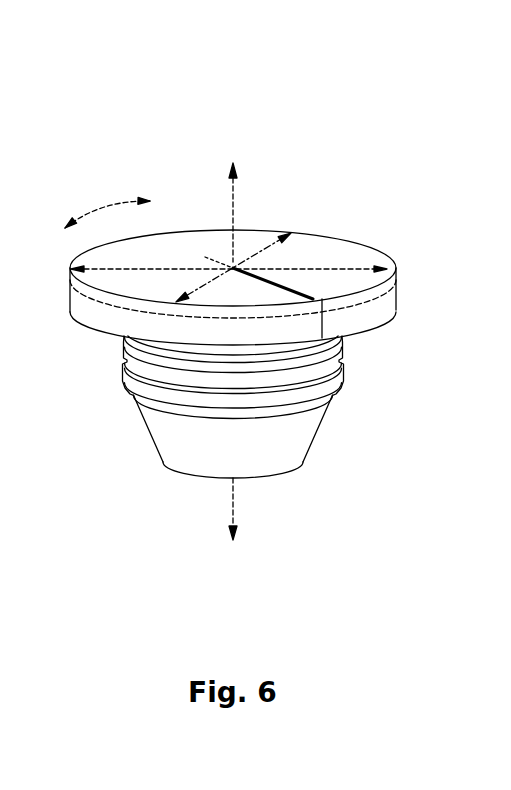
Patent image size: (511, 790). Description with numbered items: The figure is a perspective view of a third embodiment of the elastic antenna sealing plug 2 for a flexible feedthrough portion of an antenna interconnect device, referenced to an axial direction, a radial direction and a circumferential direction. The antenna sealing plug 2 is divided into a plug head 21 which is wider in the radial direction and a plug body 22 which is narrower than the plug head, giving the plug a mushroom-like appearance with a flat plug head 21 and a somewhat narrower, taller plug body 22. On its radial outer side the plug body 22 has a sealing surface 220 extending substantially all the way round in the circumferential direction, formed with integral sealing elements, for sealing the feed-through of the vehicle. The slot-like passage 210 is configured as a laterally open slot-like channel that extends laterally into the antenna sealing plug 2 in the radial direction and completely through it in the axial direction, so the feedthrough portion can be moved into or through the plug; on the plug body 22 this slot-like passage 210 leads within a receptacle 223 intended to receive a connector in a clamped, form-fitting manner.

The antenna sealing plug 2 is at (78, 95).
The plug head 21 is at (58, 258).
The plug body 22 is at (112, 338).
The slot-like passage 210 is at (313, 299).
The sealing surface 220 is at (338, 357).
The receptacle 223 is at (314, 424).